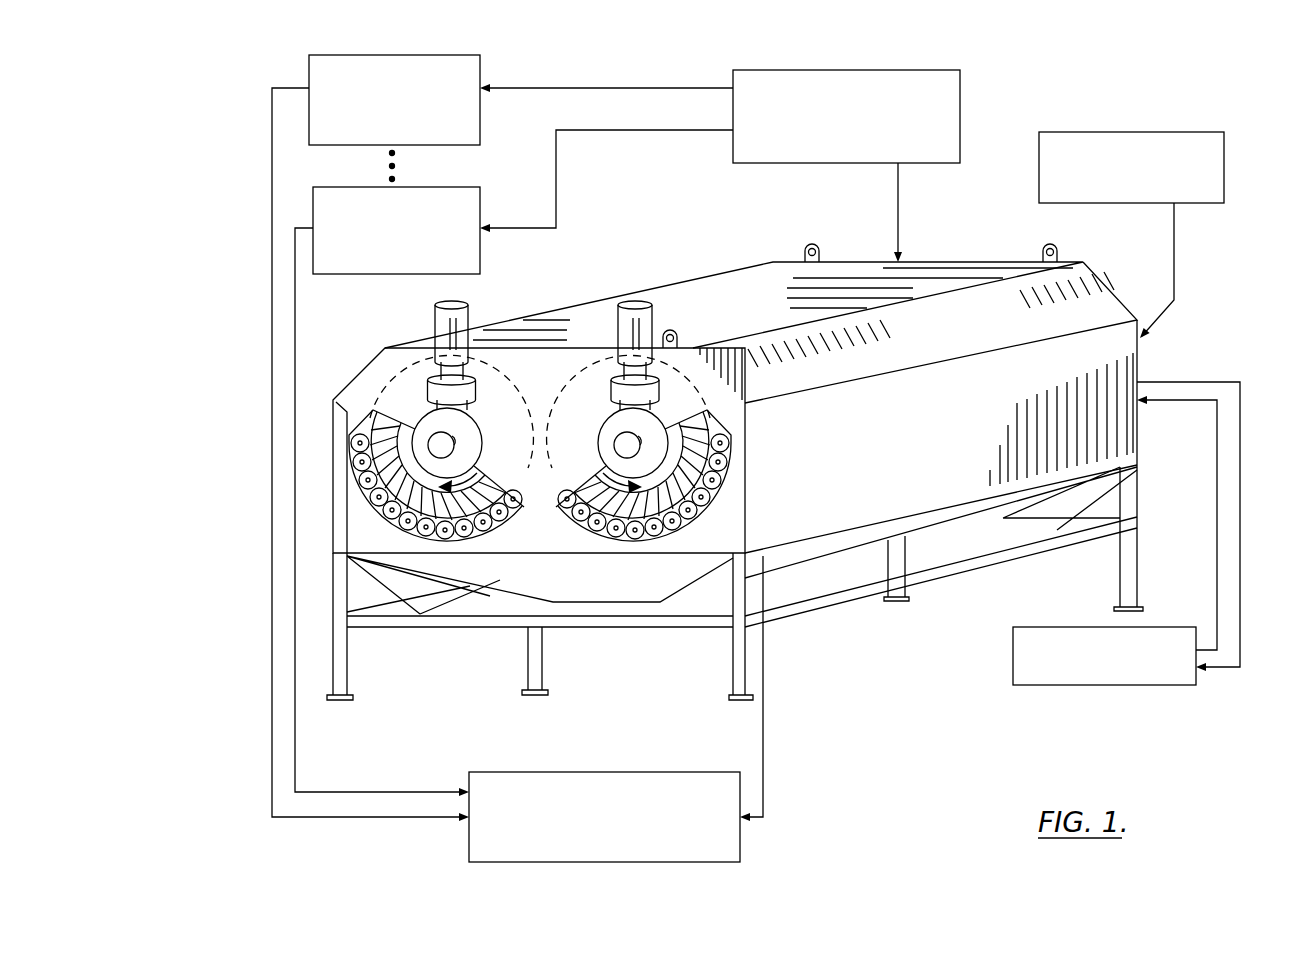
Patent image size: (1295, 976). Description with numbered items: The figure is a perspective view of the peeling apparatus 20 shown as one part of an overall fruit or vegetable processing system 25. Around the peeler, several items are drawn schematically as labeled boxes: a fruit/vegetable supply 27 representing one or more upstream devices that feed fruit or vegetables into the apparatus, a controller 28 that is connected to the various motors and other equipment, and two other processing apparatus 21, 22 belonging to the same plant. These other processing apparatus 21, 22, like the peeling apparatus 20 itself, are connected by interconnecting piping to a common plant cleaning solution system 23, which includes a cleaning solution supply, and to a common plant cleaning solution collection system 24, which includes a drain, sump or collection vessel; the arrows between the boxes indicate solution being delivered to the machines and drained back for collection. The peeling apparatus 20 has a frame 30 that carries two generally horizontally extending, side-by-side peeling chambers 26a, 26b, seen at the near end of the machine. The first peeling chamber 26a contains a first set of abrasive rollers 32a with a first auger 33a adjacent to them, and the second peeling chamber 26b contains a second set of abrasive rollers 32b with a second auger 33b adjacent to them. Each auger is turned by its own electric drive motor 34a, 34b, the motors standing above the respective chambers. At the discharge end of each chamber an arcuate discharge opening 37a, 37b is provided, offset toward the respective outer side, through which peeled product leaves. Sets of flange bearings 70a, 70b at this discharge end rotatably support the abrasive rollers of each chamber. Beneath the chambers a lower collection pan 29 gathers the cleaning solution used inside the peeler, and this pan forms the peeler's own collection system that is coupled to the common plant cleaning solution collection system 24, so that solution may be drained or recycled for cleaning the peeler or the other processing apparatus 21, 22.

The peeling apparatus 20 is at (729, 248).
The processing apparatus 21 is at (412, 55).
The processing apparatus 22 is at (460, 187).
The common plant cleaning solution system 23 is at (797, 70).
The common plant cleaning solution collection system 24 is at (702, 862).
The fruit or vegetable processing system 25 is at (1037, 66).
The first peeling chamber 26a is at (408, 384).
The second peeling chamber 26b is at (576, 396).
The fruit/vegetable supply 27 is at (1193, 132).
The controller 28 is at (1140, 687).
The lower collection pan 29 is at (551, 580).
The frame 30 is at (967, 568).
The first set of abrasive rollers 32a is at (392, 478).
The second set of abrasive rollers 32b is at (598, 533).
The first auger 33a is at (400, 437).
The second auger 33b is at (653, 477).
The electric drive motor 34a is at (445, 330).
The electric drive motor 34b is at (653, 333).
The discharge opening 37a is at (420, 470).
The discharge opening 37b is at (672, 490).
The flange bearings 70a is at (487, 542).
The flange bearings 70b is at (648, 533).